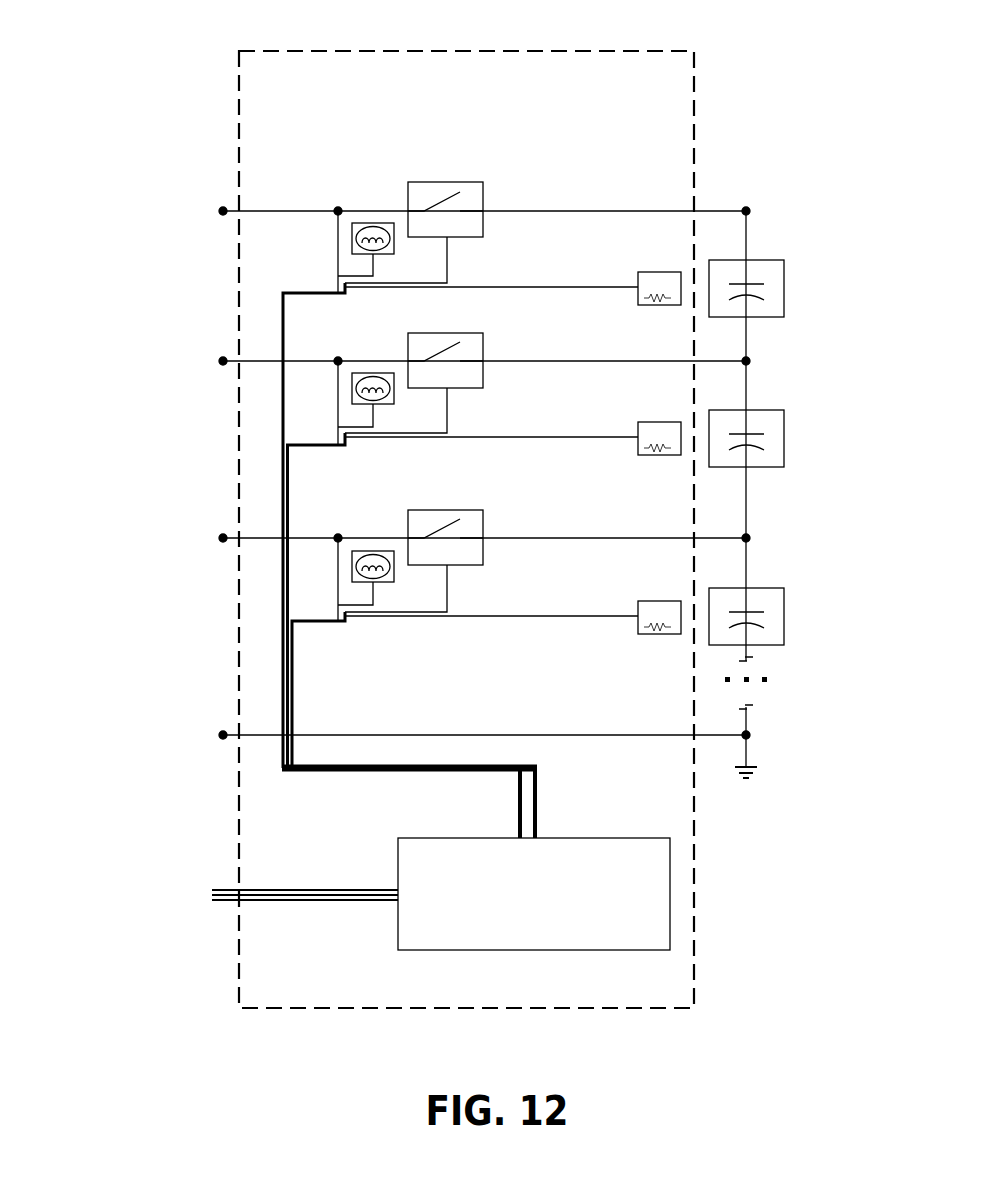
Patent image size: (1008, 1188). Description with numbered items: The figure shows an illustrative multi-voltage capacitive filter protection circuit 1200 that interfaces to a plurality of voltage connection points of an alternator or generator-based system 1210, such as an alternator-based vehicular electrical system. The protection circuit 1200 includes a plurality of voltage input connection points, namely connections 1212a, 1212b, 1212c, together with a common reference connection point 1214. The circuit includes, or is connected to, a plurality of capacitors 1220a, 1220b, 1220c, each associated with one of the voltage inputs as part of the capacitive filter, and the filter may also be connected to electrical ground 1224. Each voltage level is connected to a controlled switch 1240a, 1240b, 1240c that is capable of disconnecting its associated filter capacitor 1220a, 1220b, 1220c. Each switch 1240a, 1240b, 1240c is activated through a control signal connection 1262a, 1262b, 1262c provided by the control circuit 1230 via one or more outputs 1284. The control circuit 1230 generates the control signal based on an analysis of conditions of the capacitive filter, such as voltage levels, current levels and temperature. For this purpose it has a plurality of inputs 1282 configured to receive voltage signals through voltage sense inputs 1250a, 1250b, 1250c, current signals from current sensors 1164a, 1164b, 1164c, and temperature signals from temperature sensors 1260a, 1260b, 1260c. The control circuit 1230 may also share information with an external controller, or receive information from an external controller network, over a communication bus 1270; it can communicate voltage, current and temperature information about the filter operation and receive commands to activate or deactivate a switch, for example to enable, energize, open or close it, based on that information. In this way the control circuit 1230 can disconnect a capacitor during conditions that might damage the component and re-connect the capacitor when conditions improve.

The capacitive filter protection circuit 1200 is at (550, 51).
The alternator or generator-based system 1210 is at (131, 127).
The voltage input connection point 1212a is at (223, 211).
The voltage input connection point 1212b is at (223, 361).
The voltage input connection point 1212c is at (223, 538).
The common reference connection point 1214 is at (223, 735).
The capacitor 1220a is at (784, 260).
The capacitor 1220b is at (784, 410).
The capacitor 1220c is at (784, 588).
The electrical ground 1224 is at (750, 731).
The control circuit 1230 is at (534, 894).
The switch 1240a is at (483, 183).
The switch 1240b is at (483, 334).
The switch 1240c is at (483, 511).
The voltage sense input 1250a is at (338, 211).
The voltage sense input 1250b is at (338, 361).
The voltage sense input 1250c is at (338, 538).
The temperature sensor 1260a is at (638, 272).
The temperature sensor 1260b is at (638, 422).
The temperature sensor 1260c is at (638, 600).
The control signal connection 1262a is at (448, 260).
The control signal connection 1262b is at (448, 410).
The control signal connection 1262c is at (448, 590).
The current sensor 1164a is at (383, 252).
The current sensor 1164b is at (383, 402).
The current sensor 1164c is at (383, 580).
The communication bus 1270 is at (212, 890).
The inputs 1282 is at (518, 791).
The outputs 1284 is at (537, 790).